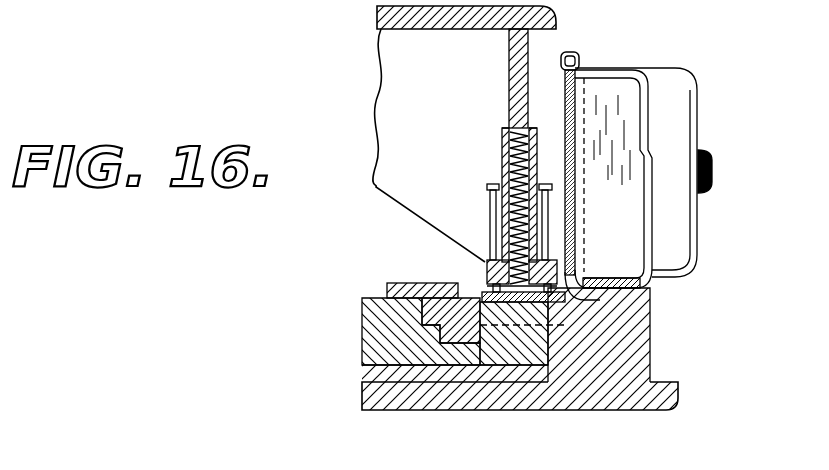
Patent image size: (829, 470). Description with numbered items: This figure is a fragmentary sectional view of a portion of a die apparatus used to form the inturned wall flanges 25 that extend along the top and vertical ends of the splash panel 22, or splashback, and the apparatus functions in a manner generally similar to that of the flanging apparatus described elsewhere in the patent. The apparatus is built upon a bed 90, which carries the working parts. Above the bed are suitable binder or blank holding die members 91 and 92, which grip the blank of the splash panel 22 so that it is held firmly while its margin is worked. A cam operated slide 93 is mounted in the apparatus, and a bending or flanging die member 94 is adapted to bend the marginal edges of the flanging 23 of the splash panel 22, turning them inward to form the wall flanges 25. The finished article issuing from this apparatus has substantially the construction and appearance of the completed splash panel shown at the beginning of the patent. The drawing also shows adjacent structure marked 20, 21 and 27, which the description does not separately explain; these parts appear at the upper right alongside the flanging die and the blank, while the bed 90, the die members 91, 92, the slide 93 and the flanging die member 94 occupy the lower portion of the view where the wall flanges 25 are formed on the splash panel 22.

The bag 20 is at (690, 82).
The liner sheet 21 is at (606, 72).
The ring 27 is at (570, 52).
The splash panel 22 is at (535, 322).
The flanging 23 is at (538, 335).
The wall flanges 25 is at (490, 312).
The bed 90 is at (532, 398).
The binder or blank holding die member 91 is at (487, 285).
The binder or blank holding die member 92 is at (432, 298).
The cam operated slide 93 is at (452, 360).
The bending or flanging die member 94 is at (478, 310).